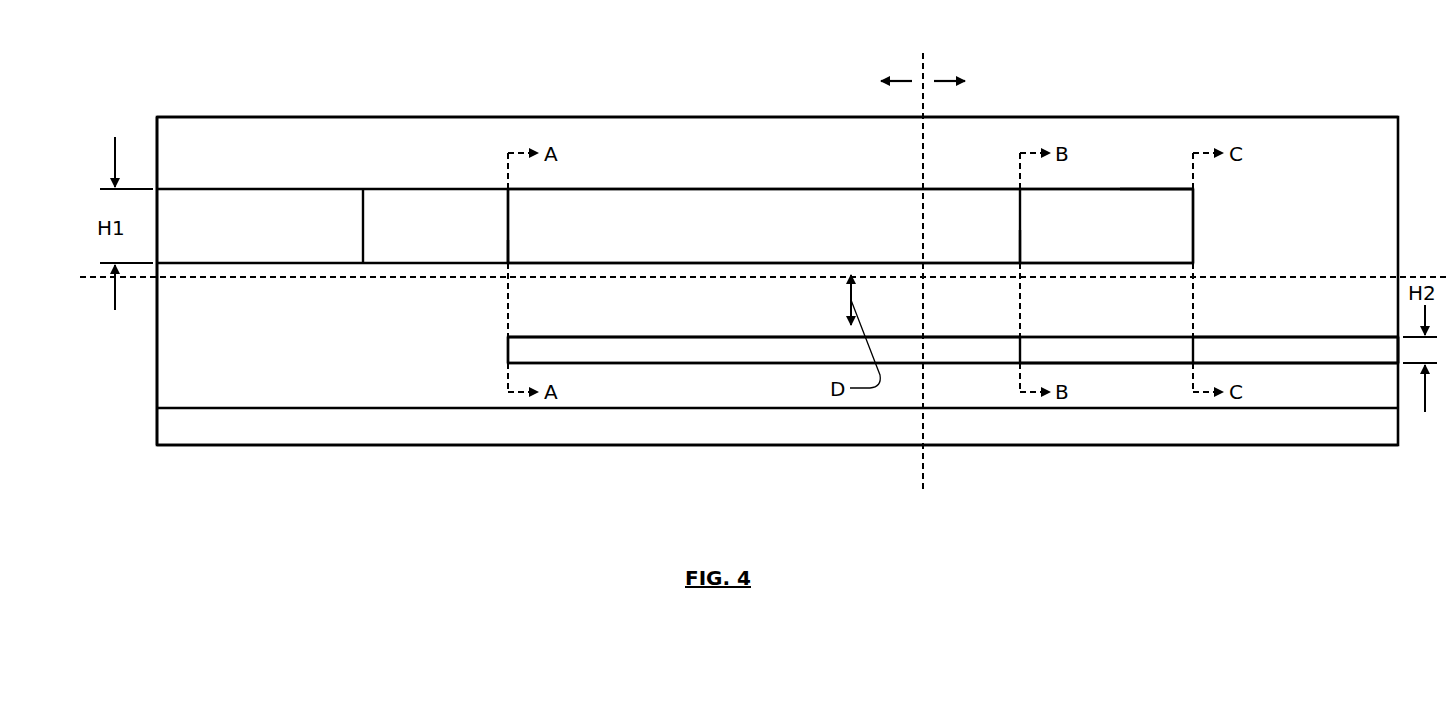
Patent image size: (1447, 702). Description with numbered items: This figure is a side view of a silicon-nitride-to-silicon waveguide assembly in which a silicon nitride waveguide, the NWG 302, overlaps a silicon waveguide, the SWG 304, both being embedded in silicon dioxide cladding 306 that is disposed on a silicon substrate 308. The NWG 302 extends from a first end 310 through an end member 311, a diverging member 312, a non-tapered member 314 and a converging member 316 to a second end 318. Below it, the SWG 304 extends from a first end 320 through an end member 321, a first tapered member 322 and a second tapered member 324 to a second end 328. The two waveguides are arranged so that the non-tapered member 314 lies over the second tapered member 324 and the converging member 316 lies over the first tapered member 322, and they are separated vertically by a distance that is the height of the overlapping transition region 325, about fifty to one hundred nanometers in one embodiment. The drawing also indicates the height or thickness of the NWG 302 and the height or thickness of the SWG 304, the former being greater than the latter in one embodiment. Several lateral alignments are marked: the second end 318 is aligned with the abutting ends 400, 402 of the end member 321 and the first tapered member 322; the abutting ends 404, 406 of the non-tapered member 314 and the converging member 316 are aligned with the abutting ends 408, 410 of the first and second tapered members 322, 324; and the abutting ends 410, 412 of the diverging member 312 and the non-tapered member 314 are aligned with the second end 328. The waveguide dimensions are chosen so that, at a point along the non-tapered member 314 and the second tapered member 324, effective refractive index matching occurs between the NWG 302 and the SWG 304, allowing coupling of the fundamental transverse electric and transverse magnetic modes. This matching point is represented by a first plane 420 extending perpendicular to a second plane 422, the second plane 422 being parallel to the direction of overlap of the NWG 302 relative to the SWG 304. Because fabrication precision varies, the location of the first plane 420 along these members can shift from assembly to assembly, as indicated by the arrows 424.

The NWG 302 is at (1193, 190).
The SWG 304 is at (508, 338).
The SiO2 cladding 306 is at (1283, 117).
The substrate 308 is at (1187, 445).
The first end 310 is at (157, 257).
The end member 311 is at (272, 150).
The diverging member 312 is at (442, 190).
The non-tapered member 314 is at (740, 190).
The converging member 316 is at (1122, 190).
The second end 318 is at (1193, 235).
The first end 320 is at (1398, 350).
The end member 321 is at (1305, 337).
The first tapered member 322 is at (1123, 365).
The second tapered member 324 is at (794, 337).
The overlapping transition region 325 is at (492, 302).
The second end 328 is at (508, 349).
The abutting end 400 is at (1193, 365).
The abutting end 402 is at (1193, 342).
The abutting end 404 is at (1020, 222).
The abutting end 406 is at (1020, 245).
The abutting end 408 is at (1020, 360).
The abutting end 410 is at (508, 203).
The abutting end 412 is at (508, 250).
The first plane 420 is at (923, 70).
The second plane 422 is at (1318, 277).
The arrows 424 is at (903, 80).